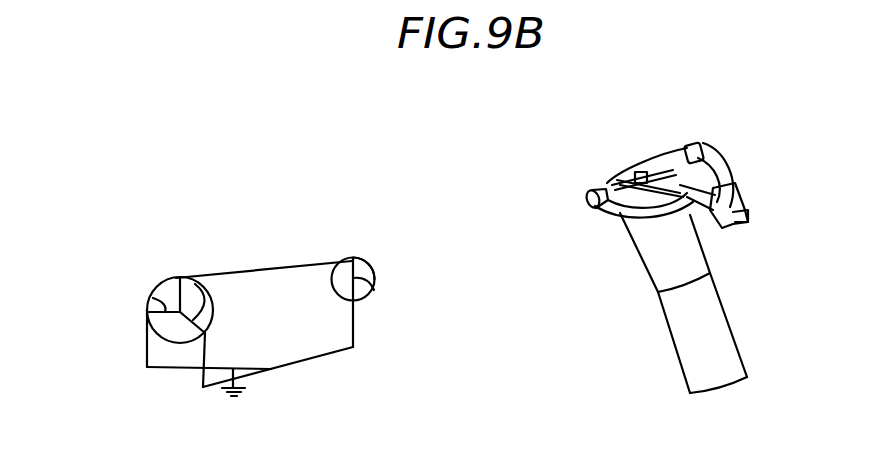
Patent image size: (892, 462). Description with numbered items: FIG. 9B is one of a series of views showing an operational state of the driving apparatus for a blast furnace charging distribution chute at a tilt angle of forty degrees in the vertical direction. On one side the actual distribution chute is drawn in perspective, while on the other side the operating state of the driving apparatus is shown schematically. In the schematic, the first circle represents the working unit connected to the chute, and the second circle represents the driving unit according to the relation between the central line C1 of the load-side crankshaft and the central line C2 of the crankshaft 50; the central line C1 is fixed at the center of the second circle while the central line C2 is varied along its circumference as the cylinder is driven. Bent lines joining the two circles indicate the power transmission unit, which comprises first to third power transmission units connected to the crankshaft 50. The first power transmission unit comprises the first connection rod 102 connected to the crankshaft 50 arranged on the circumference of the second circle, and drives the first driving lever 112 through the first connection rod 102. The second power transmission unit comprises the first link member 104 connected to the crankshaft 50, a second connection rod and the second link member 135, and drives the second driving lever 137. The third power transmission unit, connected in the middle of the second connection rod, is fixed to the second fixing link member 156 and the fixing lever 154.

The crankshaft 50 is at (353, 257).
The first connection rod 102 is at (278, 260).
The first link member 104 is at (355, 323).
The first driving lever 112 is at (179, 284).
The second link member 135 is at (208, 347).
The second driving lever 137 is at (200, 290).
The fixing lever 154 is at (157, 296).
The second fixing link member 156 is at (147, 350).
The central line of load-side crankshaft C1 is at (373, 290).
The central line of crankshaft C2 is at (373, 270).